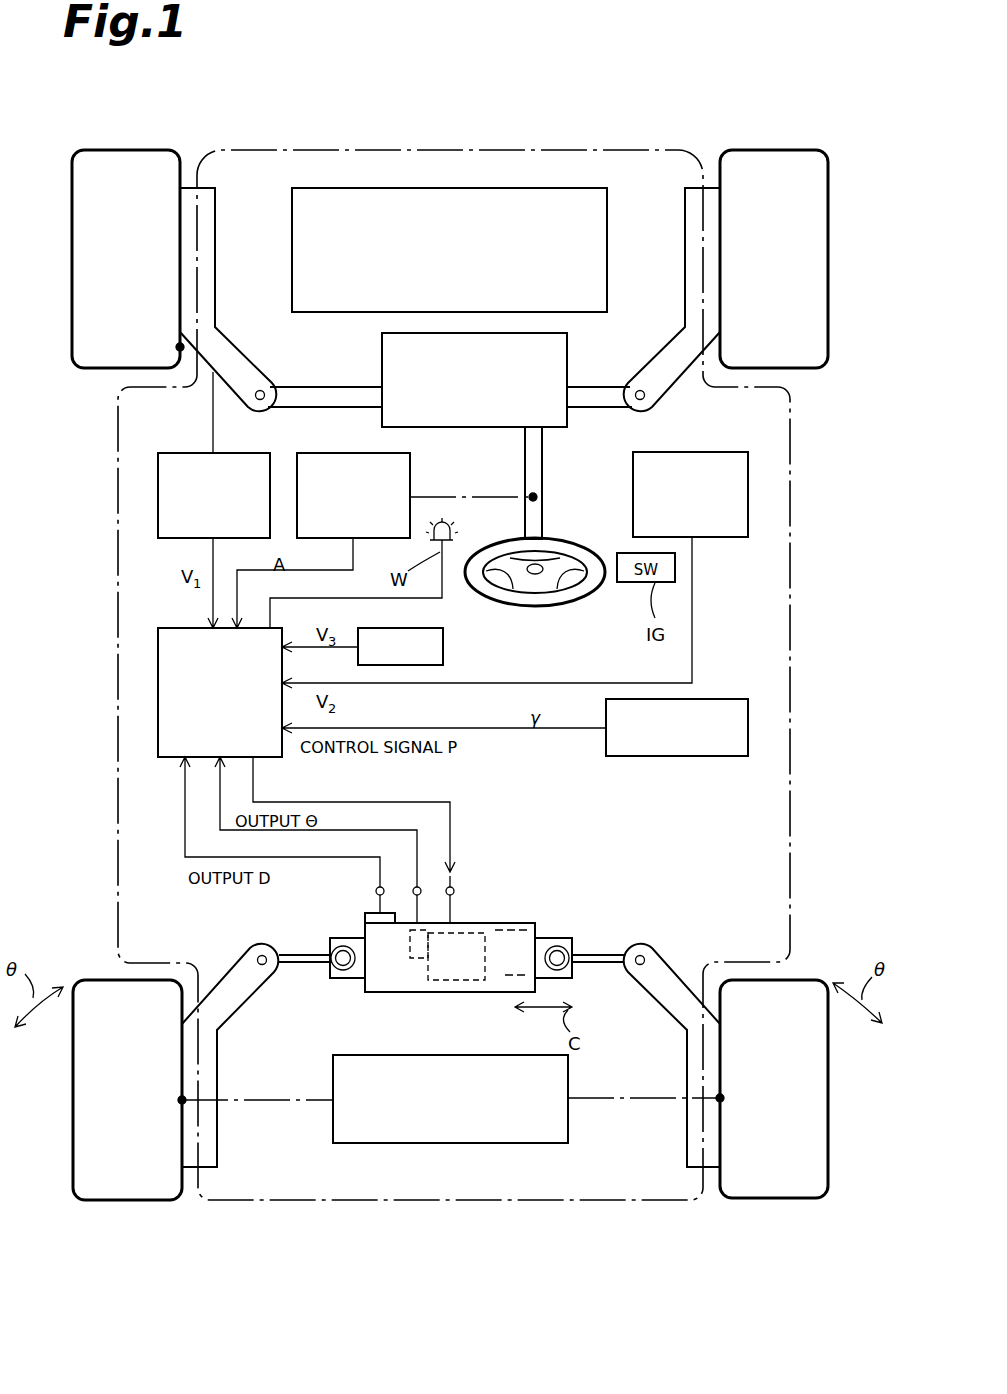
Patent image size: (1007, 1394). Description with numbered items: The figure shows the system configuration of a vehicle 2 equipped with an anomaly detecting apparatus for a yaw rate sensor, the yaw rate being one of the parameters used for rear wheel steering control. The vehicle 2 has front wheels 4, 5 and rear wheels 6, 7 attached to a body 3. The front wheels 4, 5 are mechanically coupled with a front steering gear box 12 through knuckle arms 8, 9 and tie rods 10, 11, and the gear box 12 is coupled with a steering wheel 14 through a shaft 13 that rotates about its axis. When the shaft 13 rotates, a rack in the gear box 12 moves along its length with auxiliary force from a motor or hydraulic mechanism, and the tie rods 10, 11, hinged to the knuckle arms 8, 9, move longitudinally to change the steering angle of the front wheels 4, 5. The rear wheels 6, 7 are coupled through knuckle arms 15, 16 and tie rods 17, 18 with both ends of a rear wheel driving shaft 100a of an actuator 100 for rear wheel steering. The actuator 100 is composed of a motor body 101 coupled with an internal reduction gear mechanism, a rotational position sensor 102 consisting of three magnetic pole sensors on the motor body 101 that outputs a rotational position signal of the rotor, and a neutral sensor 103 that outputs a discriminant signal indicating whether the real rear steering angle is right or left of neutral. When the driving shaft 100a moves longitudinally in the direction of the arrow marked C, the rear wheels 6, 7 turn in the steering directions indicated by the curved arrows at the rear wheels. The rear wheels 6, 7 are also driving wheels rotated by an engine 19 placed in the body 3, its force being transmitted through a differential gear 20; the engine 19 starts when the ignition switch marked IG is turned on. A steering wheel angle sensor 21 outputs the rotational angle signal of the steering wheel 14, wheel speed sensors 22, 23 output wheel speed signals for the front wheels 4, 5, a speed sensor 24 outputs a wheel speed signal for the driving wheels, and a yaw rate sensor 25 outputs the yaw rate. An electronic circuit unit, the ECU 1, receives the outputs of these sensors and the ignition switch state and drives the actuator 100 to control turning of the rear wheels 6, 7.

The electronic circuit unit (ECU) 1 is at (158, 688).
The vehicle 2 is at (90, 521).
The body 3 is at (790, 680).
The front wheel 4 is at (153, 151).
The front wheel 5 is at (769, 150).
The rear wheel 6 is at (90, 1200).
The rear wheel 7 is at (738, 1198).
The knuckle arm 8 is at (238, 355).
The knuckle arm 9 is at (663, 355).
The tie rod 10 is at (298, 388).
The tie rod 11 is at (602, 388).
The front steering gear box 12 is at (382, 358).
The shaft 13 is at (542, 450).
The steering wheel 14 is at (560, 600).
The knuckle arm 15 is at (240, 1010).
The knuckle arm 16 is at (660, 1008).
The tie rod 17 is at (293, 955).
The tie rod 18 is at (598, 955).
The engine 19 is at (540, 188).
The differential gear 20 is at (572, 1143).
The steering wheel angle sensor 21 is at (410, 474).
The wheel speed sensor 22 is at (258, 453).
The wheel speed sensor 23 is at (730, 538).
The speed sensor 24 is at (443, 645).
The yaw rate sensor 25 is at (700, 757).
The actuator 100 is at (436, 923).
The rear wheel driving shaft 100a is at (350, 978).
The motor body 101 is at (470, 930).
The rotational position sensor 102 is at (414, 958).
The neutral sensor 103 is at (365, 916).